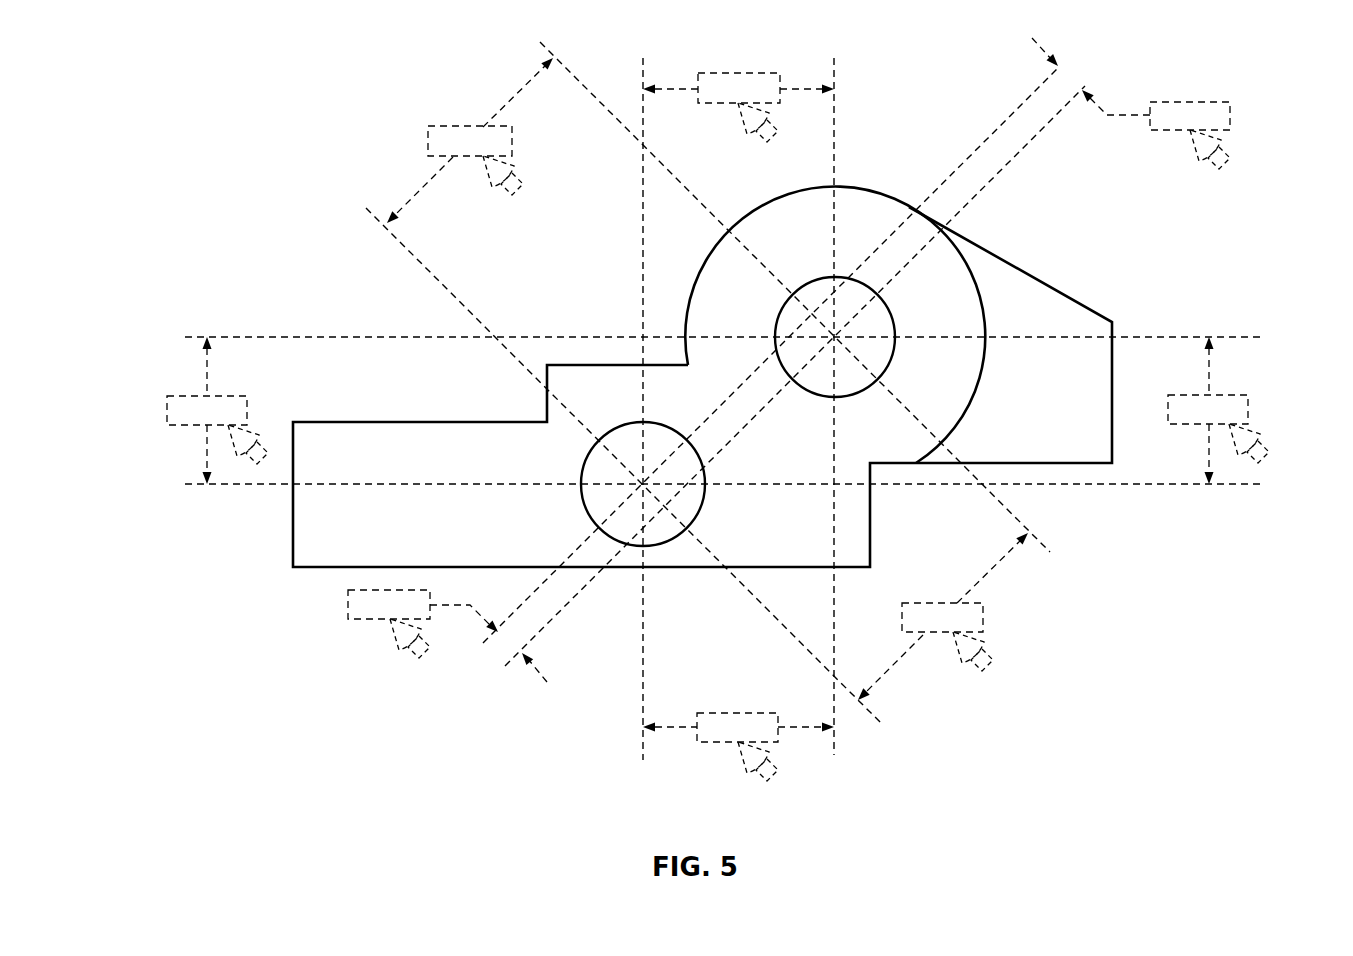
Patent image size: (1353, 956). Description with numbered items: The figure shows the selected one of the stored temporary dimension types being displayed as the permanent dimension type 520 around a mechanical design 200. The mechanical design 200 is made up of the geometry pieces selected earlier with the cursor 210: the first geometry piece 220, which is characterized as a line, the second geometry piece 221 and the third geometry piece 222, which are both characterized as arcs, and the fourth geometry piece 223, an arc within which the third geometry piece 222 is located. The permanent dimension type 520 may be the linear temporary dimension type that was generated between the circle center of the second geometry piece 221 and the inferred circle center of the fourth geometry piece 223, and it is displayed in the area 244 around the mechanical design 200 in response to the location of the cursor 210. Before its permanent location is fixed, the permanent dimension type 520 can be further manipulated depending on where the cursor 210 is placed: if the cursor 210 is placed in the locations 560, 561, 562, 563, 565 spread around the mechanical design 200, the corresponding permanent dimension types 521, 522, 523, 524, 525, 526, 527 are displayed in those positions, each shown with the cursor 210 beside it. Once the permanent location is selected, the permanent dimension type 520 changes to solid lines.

The mechanical design 200 is at (296, 87).
The cursor 210 is at (513, 177).
The first geometry piece 220 is at (660, 347).
The second geometry piece 221 is at (585, 512).
The third geometry piece 222 is at (812, 277).
The fourth geometry piece 223 is at (873, 190).
The area 244 is at (827, 131).
The permanent dimension type 520 is at (740, 73).
The permanent dimension type 521 is at (1190, 102).
The permanent dimension type 522 is at (1228, 395).
The permanent dimension type 523 is at (945, 603).
The permanent dimension type 524 is at (738, 713).
The permanent dimension type 525 is at (347, 612).
The permanent dimension type 526 is at (197, 396).
The permanent dimension type 527 is at (473, 126).
The location 560 is at (1236, 217).
The location 561 is at (982, 716).
The location 562 is at (827, 766).
The location 563 is at (440, 709).
The location 565 is at (605, 216).